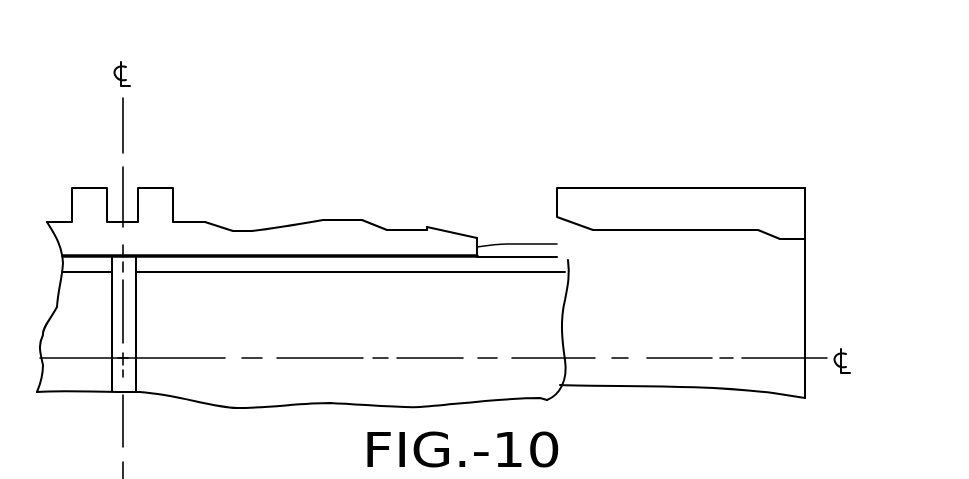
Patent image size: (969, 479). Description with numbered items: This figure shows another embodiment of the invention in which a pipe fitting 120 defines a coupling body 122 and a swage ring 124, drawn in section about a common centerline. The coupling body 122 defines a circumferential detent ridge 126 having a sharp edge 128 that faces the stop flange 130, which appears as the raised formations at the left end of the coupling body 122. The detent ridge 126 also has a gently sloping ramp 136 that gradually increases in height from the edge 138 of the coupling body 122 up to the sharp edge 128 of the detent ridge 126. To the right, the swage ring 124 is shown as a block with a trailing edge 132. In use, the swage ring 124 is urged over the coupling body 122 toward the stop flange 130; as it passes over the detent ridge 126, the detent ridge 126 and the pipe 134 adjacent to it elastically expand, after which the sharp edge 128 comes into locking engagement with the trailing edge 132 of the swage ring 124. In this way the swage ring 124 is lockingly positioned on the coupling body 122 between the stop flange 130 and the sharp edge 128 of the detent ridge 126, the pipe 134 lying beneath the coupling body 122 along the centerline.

The pipe fitting 120 is at (562, 78).
The coupling body 122 is at (340, 218).
The swage ring 124 is at (667, 187).
The detent ridge 126 is at (420, 218).
The sharp edge 128 is at (423, 222).
The stop flange 130 is at (153, 188).
The trailing edge 132 is at (803, 187).
The pipe 134 is at (568, 260).
The gently sloping ramp 136 is at (455, 227).
The edge of the coupling body 138 is at (557, 248).